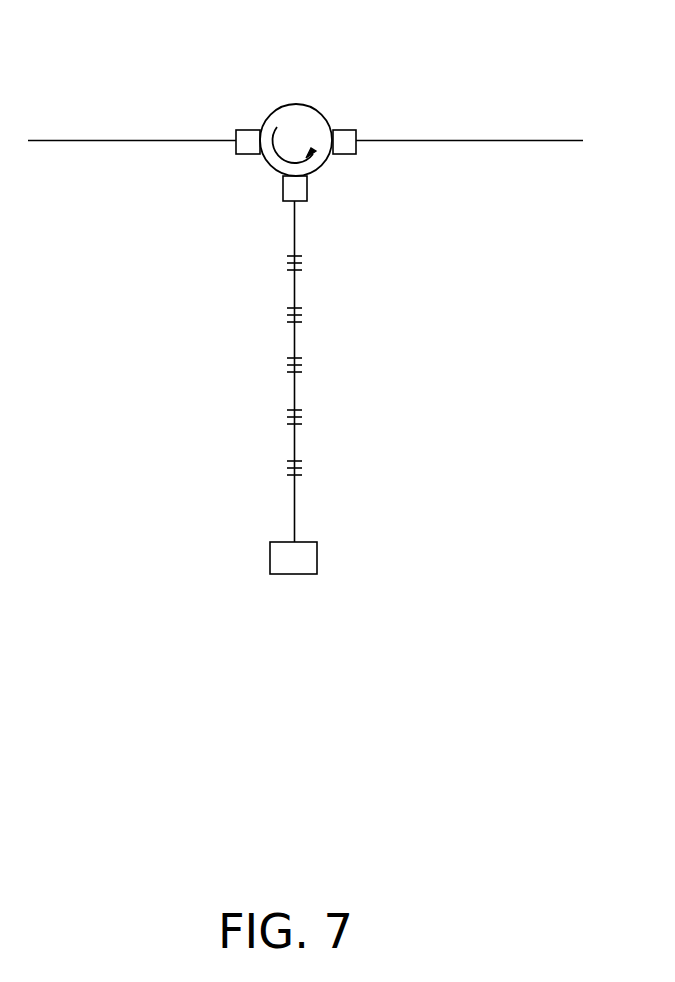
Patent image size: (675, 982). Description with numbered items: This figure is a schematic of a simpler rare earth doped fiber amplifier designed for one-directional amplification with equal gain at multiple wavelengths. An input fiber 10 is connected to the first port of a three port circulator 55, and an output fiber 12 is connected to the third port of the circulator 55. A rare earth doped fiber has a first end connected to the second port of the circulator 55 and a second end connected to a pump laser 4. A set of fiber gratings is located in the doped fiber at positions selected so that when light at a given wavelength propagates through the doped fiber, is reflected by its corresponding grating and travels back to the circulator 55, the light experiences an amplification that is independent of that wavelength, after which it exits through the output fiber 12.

The input fiber 10 is at (73, 140).
The output fiber 12 is at (527, 140).
The three port circulator 55 is at (307, 103).
The pump laser 4 is at (317, 560).